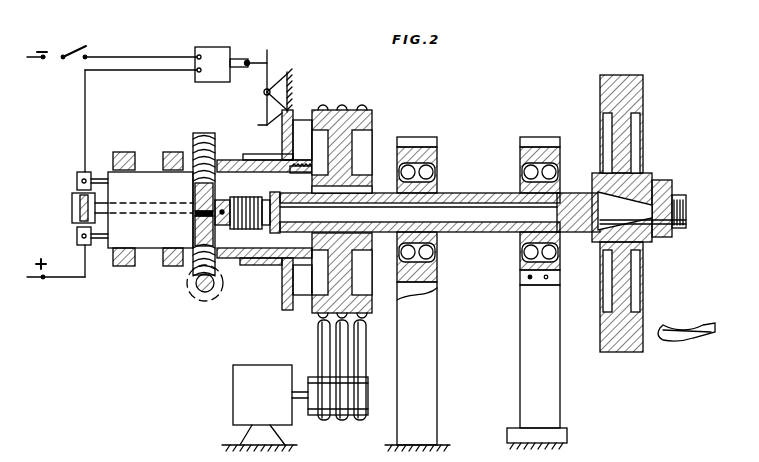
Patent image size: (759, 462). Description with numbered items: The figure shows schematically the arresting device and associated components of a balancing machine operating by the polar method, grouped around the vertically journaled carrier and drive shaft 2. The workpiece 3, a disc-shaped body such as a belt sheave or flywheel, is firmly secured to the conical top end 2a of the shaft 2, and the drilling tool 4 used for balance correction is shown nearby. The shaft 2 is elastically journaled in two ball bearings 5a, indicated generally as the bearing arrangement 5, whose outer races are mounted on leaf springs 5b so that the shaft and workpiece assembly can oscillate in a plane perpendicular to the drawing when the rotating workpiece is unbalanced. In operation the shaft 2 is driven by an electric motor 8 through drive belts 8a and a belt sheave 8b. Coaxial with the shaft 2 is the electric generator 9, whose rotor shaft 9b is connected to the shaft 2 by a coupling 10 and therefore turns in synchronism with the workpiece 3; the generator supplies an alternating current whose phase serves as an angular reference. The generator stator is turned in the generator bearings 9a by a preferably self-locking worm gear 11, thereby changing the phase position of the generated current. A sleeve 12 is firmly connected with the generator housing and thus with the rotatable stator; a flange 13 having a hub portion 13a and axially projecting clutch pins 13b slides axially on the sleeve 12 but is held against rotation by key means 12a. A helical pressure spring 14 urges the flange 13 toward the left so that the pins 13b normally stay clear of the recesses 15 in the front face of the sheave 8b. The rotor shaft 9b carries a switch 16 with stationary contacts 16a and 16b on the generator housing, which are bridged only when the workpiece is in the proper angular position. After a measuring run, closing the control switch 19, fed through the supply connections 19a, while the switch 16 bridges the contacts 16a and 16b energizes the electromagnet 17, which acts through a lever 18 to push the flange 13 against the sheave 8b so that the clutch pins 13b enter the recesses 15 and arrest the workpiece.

The carrier and drive shaft 2 is at (460, 192).
The conical top end 2a is at (653, 176).
The workpiece 3 is at (644, 95).
The drilling tool 4 is at (685, 330).
The bearing support 5 is at (478, 209).
The ball bearings 5a is at (520, 175).
The leaf springs 5b is at (436, 358).
The electric motor 8 is at (233, 392).
The drive belts 8a is at (350, 356).
The belt sheave 8b is at (372, 113).
The electric generator 9 is at (148, 172).
The generator bearings 9a is at (122, 155).
The rotor shaft 9b is at (146, 205).
The coupling 10 is at (243, 197).
The worm gear 11 is at (195, 288).
The sleeve 12 is at (224, 165).
The key means 12a is at (231, 170).
The flange 13 is at (282, 290).
The hub portion 13a is at (262, 262).
The clutch pins 13b is at (300, 108).
The helical pressure spring 14 is at (298, 166).
The recesses 15 is at (338, 104).
The switch 16 is at (72, 211).
The stationary contact 16a is at (77, 181).
The stationary contact 16b is at (77, 237).
The electromagnet 17 is at (206, 50).
The lever 18 is at (265, 125).
The control switch 19 is at (70, 50).
The supply line 19a is at (84, 111).